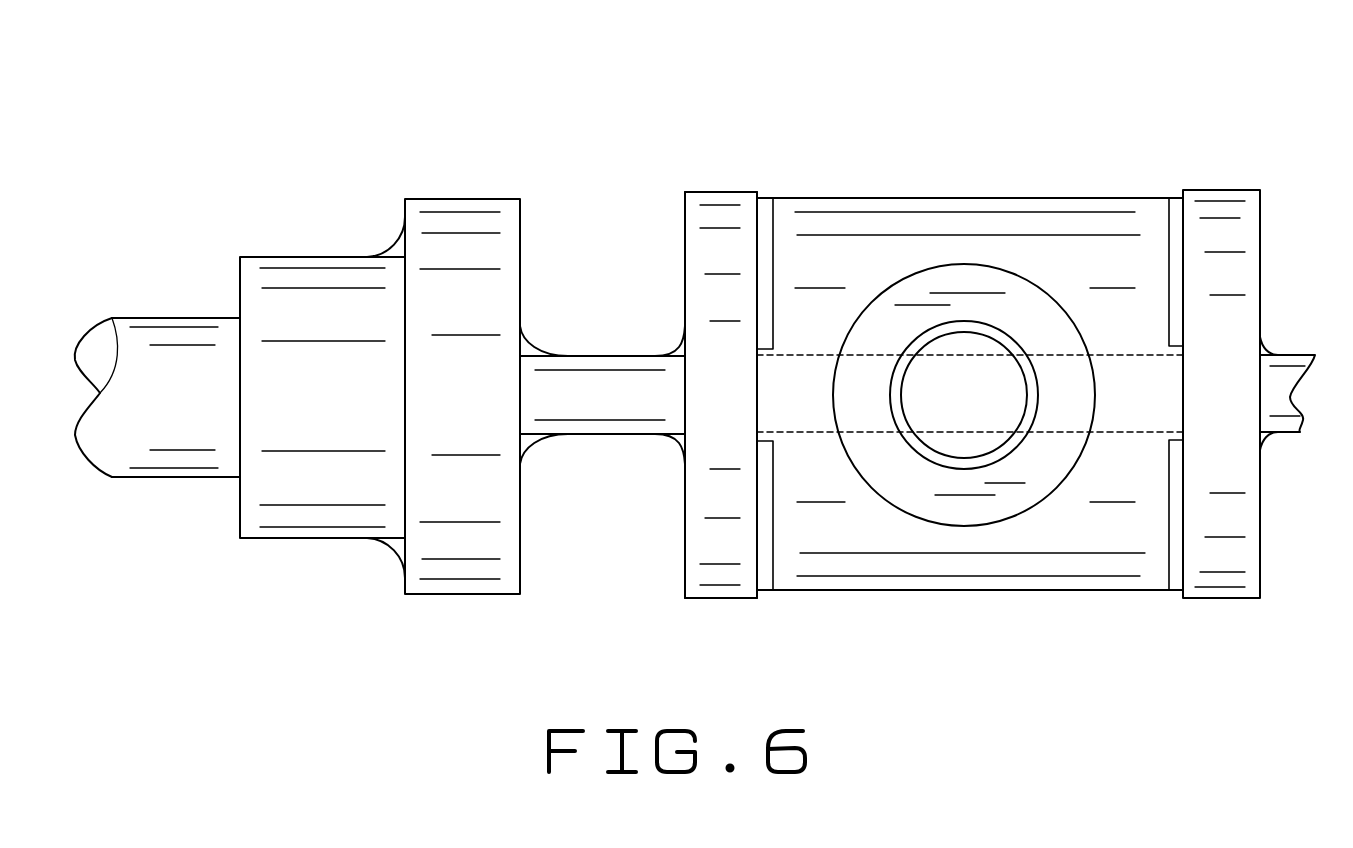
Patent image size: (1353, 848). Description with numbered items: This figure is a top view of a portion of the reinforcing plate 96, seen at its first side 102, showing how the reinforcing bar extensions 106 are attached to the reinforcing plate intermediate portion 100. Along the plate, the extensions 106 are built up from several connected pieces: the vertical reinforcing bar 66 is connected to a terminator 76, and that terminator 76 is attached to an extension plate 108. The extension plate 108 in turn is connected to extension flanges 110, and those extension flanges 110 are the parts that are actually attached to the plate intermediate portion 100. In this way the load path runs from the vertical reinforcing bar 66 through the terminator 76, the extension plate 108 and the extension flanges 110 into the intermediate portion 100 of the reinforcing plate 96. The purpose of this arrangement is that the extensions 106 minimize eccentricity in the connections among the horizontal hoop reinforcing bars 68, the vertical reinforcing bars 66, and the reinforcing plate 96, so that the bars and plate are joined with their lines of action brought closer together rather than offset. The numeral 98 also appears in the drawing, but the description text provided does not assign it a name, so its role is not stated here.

The vertical reinforcing bar 66 is at (982, 438).
The horizontal hoop reinforcing bar 68 is at (172, 318).
The terminator 76 is at (327, 257).
The reinforcing plate 96 is at (696, 319).
The flange 98 is at (458, 198).
The reinforcing plate intermediate portion 100 is at (603, 356).
The first side 102 is at (553, 476).
The reinforcing bar extensions 106 is at (665, 165).
The extension plate 108 is at (982, 197).
The extension flanges 110 is at (723, 192).